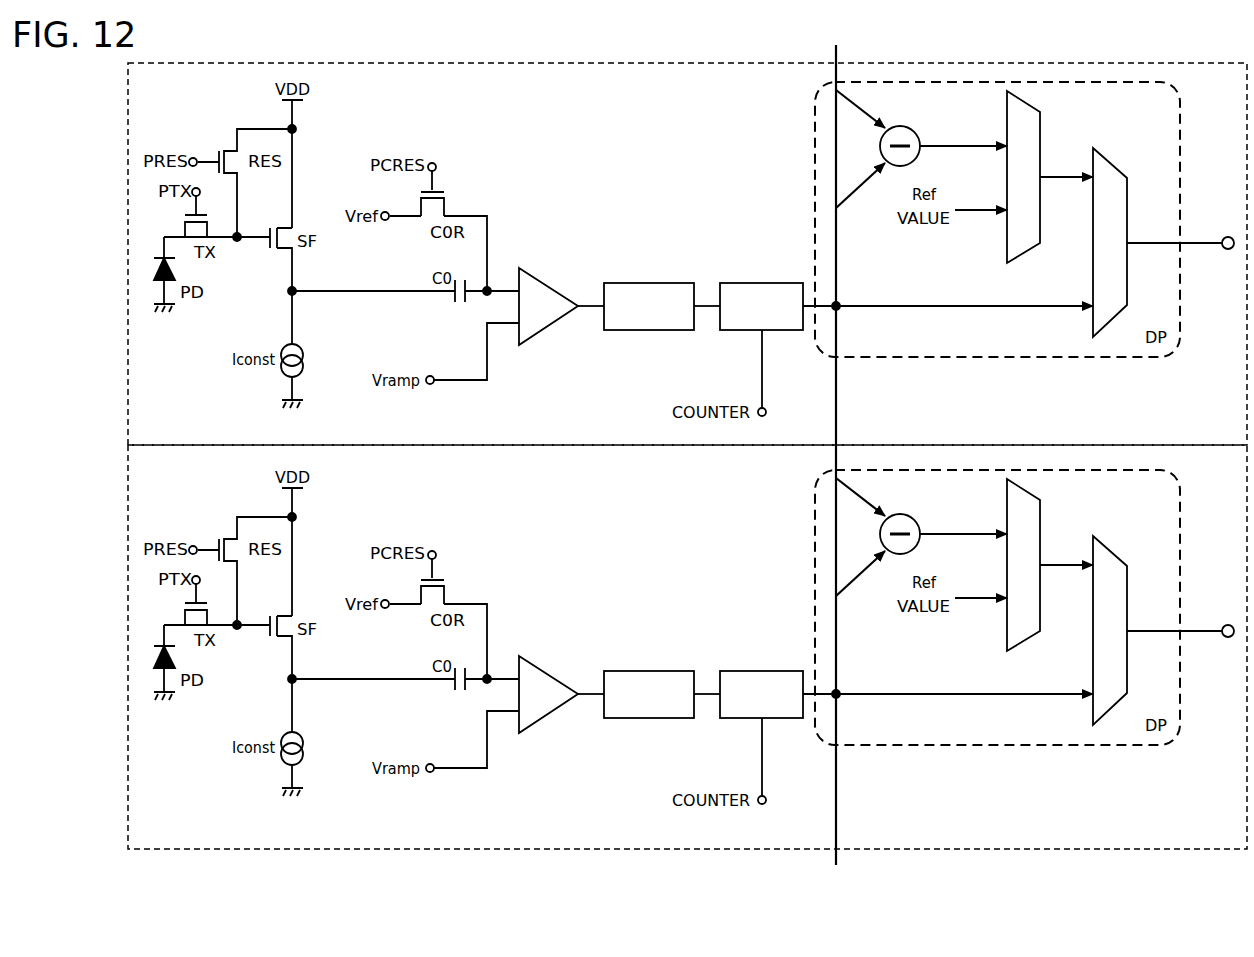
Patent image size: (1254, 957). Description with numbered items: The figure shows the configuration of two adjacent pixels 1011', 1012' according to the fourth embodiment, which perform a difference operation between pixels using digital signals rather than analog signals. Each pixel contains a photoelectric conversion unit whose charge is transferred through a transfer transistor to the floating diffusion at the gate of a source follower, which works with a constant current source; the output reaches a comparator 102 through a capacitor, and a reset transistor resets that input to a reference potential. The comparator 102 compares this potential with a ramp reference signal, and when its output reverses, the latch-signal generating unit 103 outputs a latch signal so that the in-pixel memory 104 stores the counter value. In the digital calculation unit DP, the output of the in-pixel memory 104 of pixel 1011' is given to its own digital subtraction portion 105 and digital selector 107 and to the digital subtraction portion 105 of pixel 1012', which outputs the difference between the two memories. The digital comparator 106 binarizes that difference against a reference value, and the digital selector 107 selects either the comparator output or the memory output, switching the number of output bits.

The pixel 1011' is at (661, 252).
The pixel 1012' is at (661, 647).
The comparator 102 is at (546, 279).
The latch-signal generating unit 103 is at (635, 283).
The in-pixel memory 104 is at (750, 283).
The digital subtraction portion 105 is at (920, 131).
The digital comparator 106 is at (1040, 128).
The digital selector 107 is at (1117, 165).